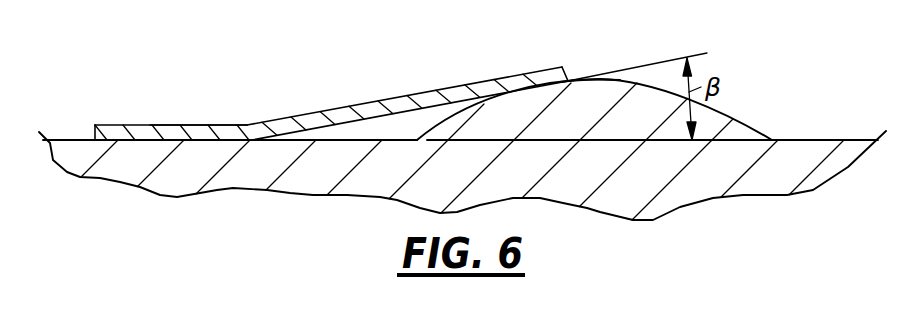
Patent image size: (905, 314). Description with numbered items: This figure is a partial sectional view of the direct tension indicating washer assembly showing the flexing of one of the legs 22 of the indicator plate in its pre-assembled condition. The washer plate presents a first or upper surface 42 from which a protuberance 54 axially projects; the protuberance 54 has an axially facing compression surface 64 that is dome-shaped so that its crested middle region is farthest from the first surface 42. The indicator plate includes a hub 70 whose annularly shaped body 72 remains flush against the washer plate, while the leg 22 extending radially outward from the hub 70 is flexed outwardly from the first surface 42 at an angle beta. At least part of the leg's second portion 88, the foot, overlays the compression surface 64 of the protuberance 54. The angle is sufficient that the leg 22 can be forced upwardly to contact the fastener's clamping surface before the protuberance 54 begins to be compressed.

The first surface 42 is at (74, 140).
The hub 70 is at (122, 125).
The body 72 is at (181, 125).
The leg 22 is at (448, 88).
The second portion 88 is at (543, 70).
The compression surface 64 is at (632, 100).
The protuberance 54 is at (752, 124).